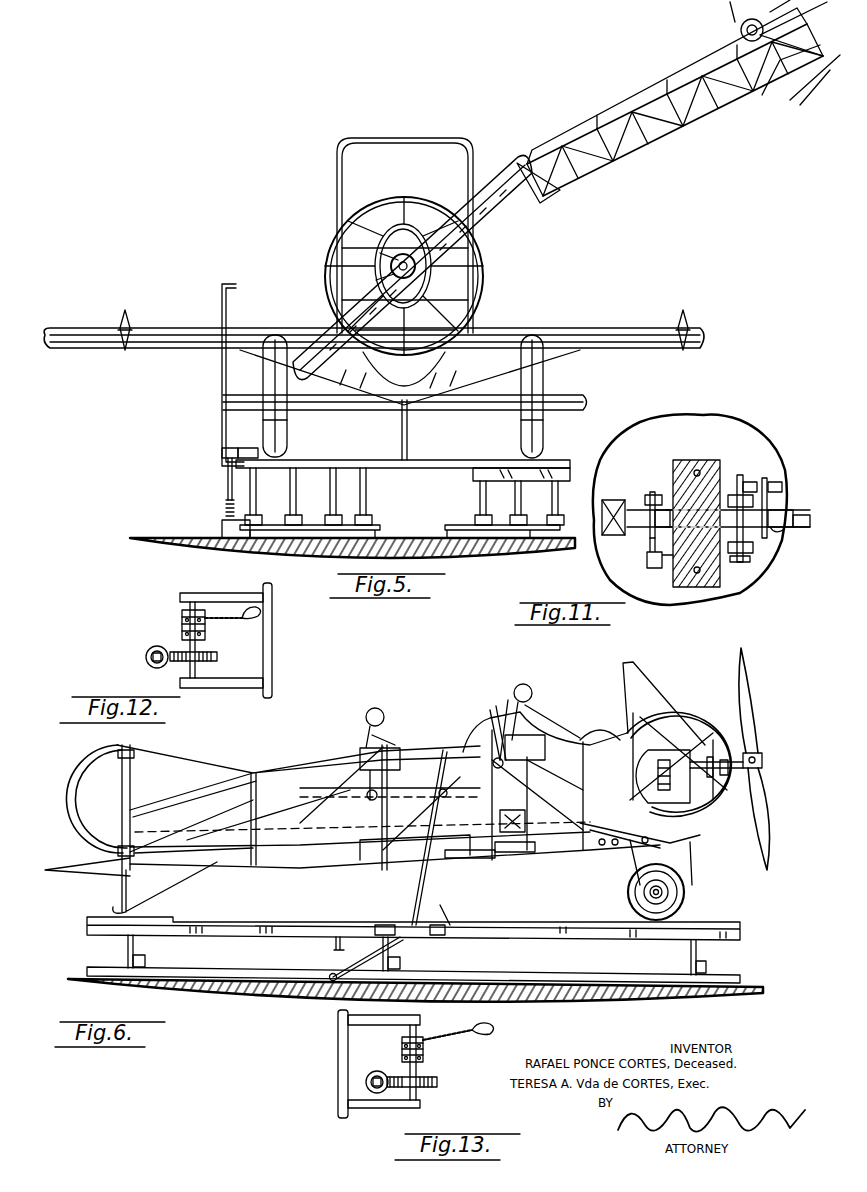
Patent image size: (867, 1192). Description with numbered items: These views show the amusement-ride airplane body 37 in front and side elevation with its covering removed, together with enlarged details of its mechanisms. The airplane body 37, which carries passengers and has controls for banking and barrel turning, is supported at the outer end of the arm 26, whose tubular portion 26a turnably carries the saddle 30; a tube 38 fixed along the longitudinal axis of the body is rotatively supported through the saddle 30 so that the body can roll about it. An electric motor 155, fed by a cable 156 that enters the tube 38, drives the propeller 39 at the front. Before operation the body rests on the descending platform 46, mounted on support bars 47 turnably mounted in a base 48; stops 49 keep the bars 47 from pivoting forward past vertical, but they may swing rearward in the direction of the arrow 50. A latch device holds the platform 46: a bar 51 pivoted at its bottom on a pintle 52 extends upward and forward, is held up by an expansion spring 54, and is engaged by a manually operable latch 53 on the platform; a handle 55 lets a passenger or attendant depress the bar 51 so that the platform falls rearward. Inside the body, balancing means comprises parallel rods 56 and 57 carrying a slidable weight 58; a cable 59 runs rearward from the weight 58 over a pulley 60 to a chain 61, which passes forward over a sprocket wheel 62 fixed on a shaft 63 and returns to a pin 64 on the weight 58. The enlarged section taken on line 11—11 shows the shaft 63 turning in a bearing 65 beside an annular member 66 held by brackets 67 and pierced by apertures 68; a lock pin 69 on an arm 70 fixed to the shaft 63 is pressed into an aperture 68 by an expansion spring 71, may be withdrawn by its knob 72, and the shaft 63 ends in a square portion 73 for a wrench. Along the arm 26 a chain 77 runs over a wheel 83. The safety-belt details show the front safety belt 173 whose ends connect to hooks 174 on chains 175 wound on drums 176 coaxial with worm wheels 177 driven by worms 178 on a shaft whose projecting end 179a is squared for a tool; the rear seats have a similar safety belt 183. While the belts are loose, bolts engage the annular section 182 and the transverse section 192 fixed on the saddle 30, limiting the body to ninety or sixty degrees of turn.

In FIG. 6, the fuselage frame 11 is at (485, 865).
In FIG. 5, the arm 26 is at (690, 128).
In FIG. 5, the tubular portion 26a is at (533, 196).
In FIG. 5, the saddle 30 is at (359, 258).
In FIG. 5, the airplane body 37 is at (550, 324).
In FIG. 6, the tube 38 is at (443, 770).
In FIG. 5, the propeller 39 is at (498, 165).
In FIG. 6, the propeller 39 is at (758, 676).
In FIG. 5, the platform 46 is at (445, 460).
In FIG. 6, the platform 46 is at (240, 925).
In FIG. 5, the support bars 47 is at (330, 492).
In FIG. 6, the support bars 47 is at (127, 950).
In FIG. 6, the base 48 is at (222, 968).
In FIG. 6, the stops 49 is at (140, 960).
In FIG. 6, the arrow 50 is at (70, 936).
In FIG. 5, the bar 51 is at (226, 478).
In FIG. 6, the bar 51 is at (345, 958).
In FIG. 6, the pintle 52 is at (328, 982).
In FIG. 5, the latch 53 is at (232, 448).
In FIG. 6, the latch 53 is at (385, 925).
In FIG. 5, the expansion spring 54 is at (222, 503).
In FIG. 6, the expansion spring 54 is at (345, 938).
In FIG. 5, the handle 55 is at (231, 282).
In FIG. 6, the handle 55 is at (438, 925).
In FIG. 11, the rod 56 is at (700, 470).
In FIG. 11, the rod 57 is at (715, 585).
In FIG. 11, the weight 58 is at (712, 470).
In FIG. 6, the weight 58 is at (450, 855).
In FIG. 6, the cable 59 is at (410, 845).
In FIG. 6, the pulley 60 is at (128, 826).
In FIG. 6, the chain 61 is at (158, 830).
In FIG. 11, the sprocket wheel 62 is at (654, 492).
In FIG. 11, the shaft 63 is at (785, 535).
In FIG. 11, the pin 64 is at (665, 568).
In FIG. 11, the bearing 65 is at (610, 500).
In FIG. 11, the annular member 66 is at (745, 560).
In FIG. 11, the brackets 67 is at (785, 505).
In FIG. 6, the apertures 68 is at (530, 848).
In FIG. 11, the lock pin 69 is at (772, 490).
In FIG. 11, the arm 70 is at (764, 478).
In FIG. 11, the expansion spring 71 is at (752, 490).
In FIG. 11, the knob 72 is at (782, 488).
In FIG. 11, the square portion 73 is at (800, 527).
In FIG. 6, the square portion 73 is at (520, 855).
In FIG. 5, the chain 77 is at (740, 28).
In FIG. 5, the wheel 83 is at (762, 95).
In FIG. 6, the electric motor 155 is at (680, 750).
In FIG. 6, the cable 156 is at (692, 818).
In FIG. 6, the safety belt 173 is at (610, 700).
In FIG. 12, the hooks 174 is at (262, 622).
In FIG. 13, the hooks 174 is at (495, 1032).
In FIG. 12, the chains 175 is at (235, 622).
In FIG. 13, the chains 175 is at (465, 1038).
In FIG. 12, the drums 176 is at (185, 612).
In FIG. 13, the drums 176 is at (425, 1055).
In FIG. 12, the worm wheels 177 is at (218, 656).
In FIG. 13, the worm wheels 177 is at (440, 1083).
In FIG. 12, the worms 178 is at (158, 645).
In FIG. 6, the worms 178 is at (372, 790).
In FIG. 13, the worms 178 is at (372, 1088).
In FIG. 12, the end 179a is at (152, 648).
In FIG. 13, the end 179a is at (370, 1074).
In FIG. 6, the annular section 182 is at (508, 690).
In FIG. 6, the safety belt 183 is at (405, 772).
In FIG. 6, the transverse section 192 is at (500, 730).